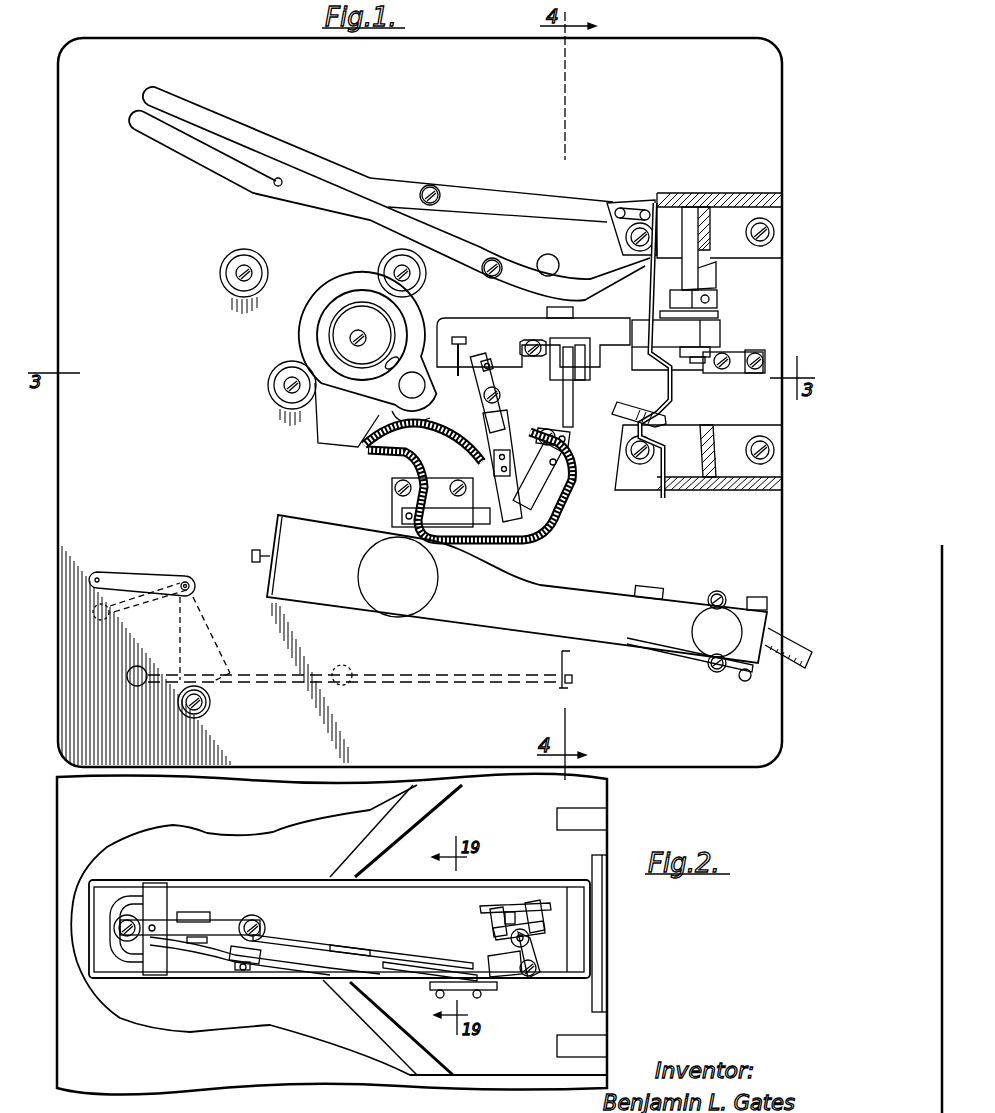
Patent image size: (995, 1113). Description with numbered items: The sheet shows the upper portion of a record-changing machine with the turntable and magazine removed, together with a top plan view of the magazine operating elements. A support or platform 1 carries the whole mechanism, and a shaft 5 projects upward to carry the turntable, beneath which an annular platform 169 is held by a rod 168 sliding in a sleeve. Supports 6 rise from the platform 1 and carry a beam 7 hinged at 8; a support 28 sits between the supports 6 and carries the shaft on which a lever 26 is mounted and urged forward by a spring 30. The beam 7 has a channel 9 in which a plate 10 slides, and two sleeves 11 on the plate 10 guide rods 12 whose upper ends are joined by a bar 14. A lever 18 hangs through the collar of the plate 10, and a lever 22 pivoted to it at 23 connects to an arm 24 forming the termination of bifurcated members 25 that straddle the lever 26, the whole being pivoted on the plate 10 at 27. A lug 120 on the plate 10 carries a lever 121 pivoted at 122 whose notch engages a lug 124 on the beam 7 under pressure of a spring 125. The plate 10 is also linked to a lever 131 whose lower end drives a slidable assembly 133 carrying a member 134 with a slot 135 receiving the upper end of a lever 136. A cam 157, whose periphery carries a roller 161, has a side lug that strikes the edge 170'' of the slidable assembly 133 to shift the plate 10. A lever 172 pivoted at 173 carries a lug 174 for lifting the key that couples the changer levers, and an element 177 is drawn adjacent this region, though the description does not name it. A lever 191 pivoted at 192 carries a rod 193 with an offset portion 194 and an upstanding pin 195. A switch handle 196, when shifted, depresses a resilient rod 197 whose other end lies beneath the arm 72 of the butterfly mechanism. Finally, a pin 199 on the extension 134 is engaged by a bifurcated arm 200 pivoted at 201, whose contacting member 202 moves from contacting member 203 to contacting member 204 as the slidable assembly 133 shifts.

In FIG. 1, the support or platform 1 is at (66, 683).
In FIG. 1, the shaft 5 is at (358, 330).
In FIG. 1, the supports 6 is at (717, 233).
In FIG. 2, the beam 7 is at (185, 830).
In FIG. 2, the hinge mounting 8 is at (600, 820).
In FIG. 2, the channel or depressed portion 9 is at (112, 895).
In FIG. 2, the plate 10 is at (268, 905).
In FIG. 2, the sleeves 11 is at (127, 936).
In FIG. 2, the rods 12 is at (114, 928).
In FIG. 2, the bar 14 is at (223, 925).
In FIG. 2, the lever 18 is at (197, 912).
In FIG. 2, the lever 22 is at (312, 952).
In FIG. 2, the pivotal connection 23 is at (207, 952).
In FIG. 2, the arm 24 is at (531, 949).
In FIG. 2, the bifurcated members 25 is at (482, 918).
In FIG. 1, the lever 26 is at (720, 316).
In FIG. 2, the lever 26 is at (518, 904).
In FIG. 2, the pivot mounting 27 is at (510, 933).
In FIG. 1, the support 28 is at (721, 333).
In FIG. 1, the spring 30 is at (719, 300).
In FIG. 1, the arm 72 is at (560, 663).
In FIG. 2, the lug 120 is at (260, 955).
In FIG. 2, the lever 121 is at (357, 962).
In FIG. 2, the pivot 122 is at (245, 970).
In FIG. 2, the lug 124 is at (440, 976).
In FIG. 2, the spring 125 is at (397, 953).
In FIG. 1, the lever 131 is at (716, 356).
In FIG. 1, the slidable assembly 133 is at (609, 375).
In FIG. 1, the member or extension 134 is at (473, 318).
In FIG. 1, the slot 135 is at (457, 337).
In FIG. 1, the lever 136 is at (458, 377).
In FIG. 1, the cam 157 is at (567, 400).
In FIG. 1, the roller 161 is at (578, 350).
In FIG. 1, the rod 168 is at (405, 386).
In FIG. 1, the platform 169 is at (300, 337).
In FIG. 1, the edge 170'' is at (542, 337).
In FIG. 1, the lever 172 is at (452, 252).
In FIG. 1, the pivot mounting 173 is at (493, 262).
In FIG. 1, the lug 174 is at (712, 275).
In FIG. 1, the pawl 177 is at (631, 409).
In FIG. 1, the lever 191 is at (488, 201).
In FIG. 1, the pivot mounting 192 is at (440, 176).
In FIG. 1, the rod 193 is at (630, 240).
In FIG. 1, the offset portion 194 is at (675, 390).
In FIG. 1, the pin 195 is at (277, 186).
In FIG. 1, the switch handle 196 is at (170, 576).
In FIG. 1, the rod 197 is at (472, 676).
In FIG. 1, the pin 199 is at (484, 361).
In FIG. 1, the bifurcated arm 200 is at (495, 381).
In FIG. 1, the pivot mounting 201 is at (486, 405).
In FIG. 1, the contacting member 202 is at (494, 458).
In FIG. 1, the contacting member 203 is at (548, 497).
In FIG. 1, the contacting member 204 is at (480, 522).